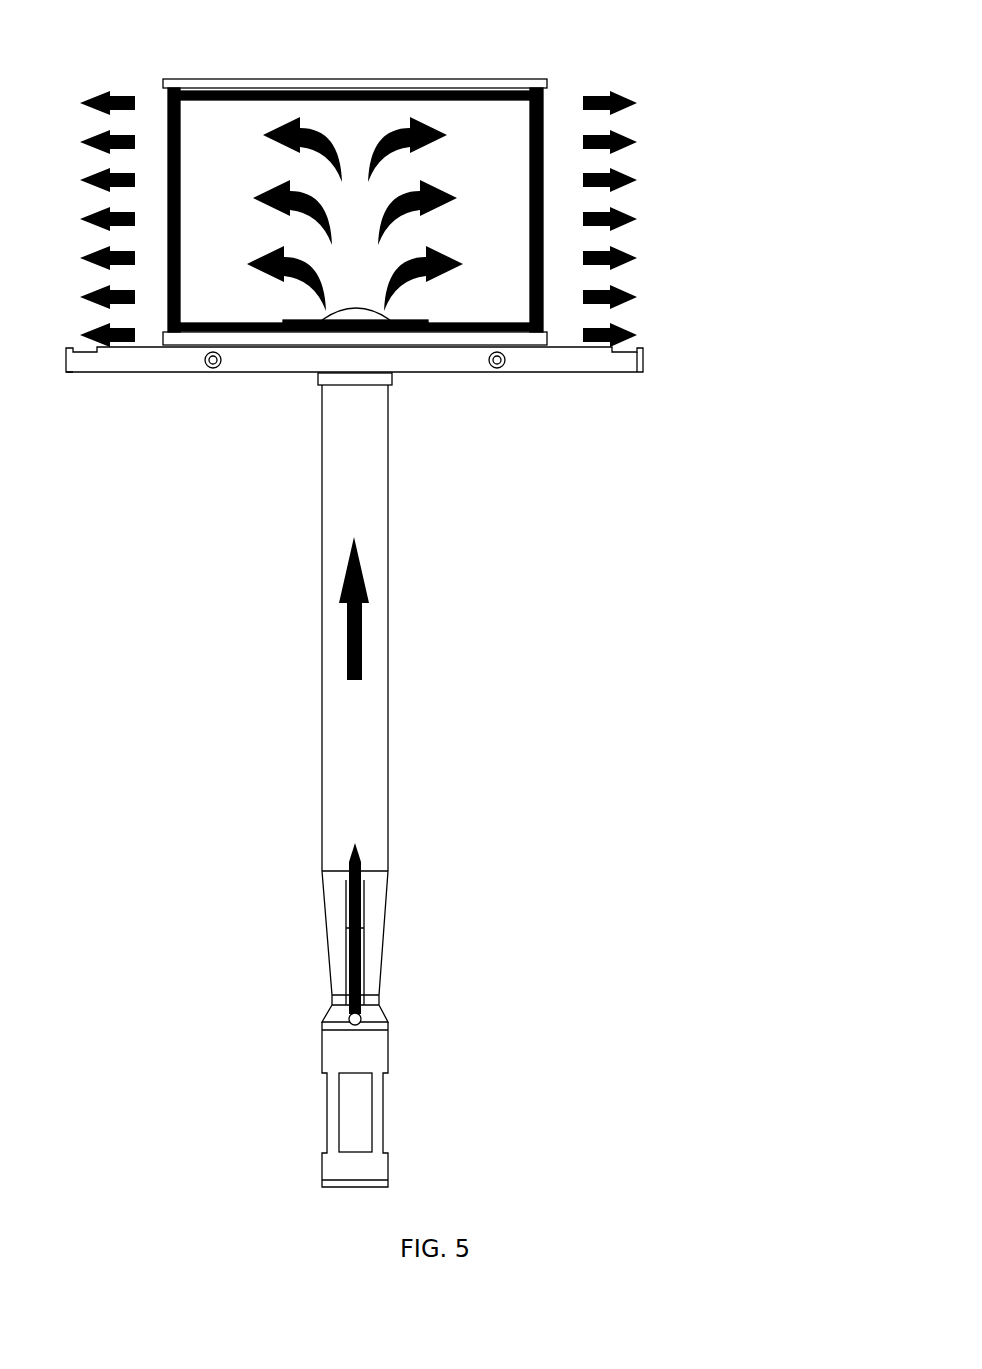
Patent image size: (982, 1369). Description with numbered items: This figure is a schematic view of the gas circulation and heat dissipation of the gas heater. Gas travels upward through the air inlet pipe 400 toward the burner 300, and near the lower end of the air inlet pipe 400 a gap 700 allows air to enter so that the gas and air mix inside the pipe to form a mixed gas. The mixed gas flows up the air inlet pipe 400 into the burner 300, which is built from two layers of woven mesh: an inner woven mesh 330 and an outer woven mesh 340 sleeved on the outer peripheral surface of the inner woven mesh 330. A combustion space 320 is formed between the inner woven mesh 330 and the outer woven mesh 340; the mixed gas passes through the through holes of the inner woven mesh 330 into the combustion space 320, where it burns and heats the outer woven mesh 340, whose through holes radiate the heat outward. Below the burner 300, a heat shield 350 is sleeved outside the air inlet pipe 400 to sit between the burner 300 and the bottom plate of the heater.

The burner 300 is at (662, 158).
The combustion space 320 is at (170, 310).
The inner woven mesh 330 is at (172, 133).
The outer woven mesh 340 is at (545, 135).
The heat shield 350 is at (520, 373).
The air inlet pipe 400 is at (388, 730).
The gap 700 is at (358, 1117).